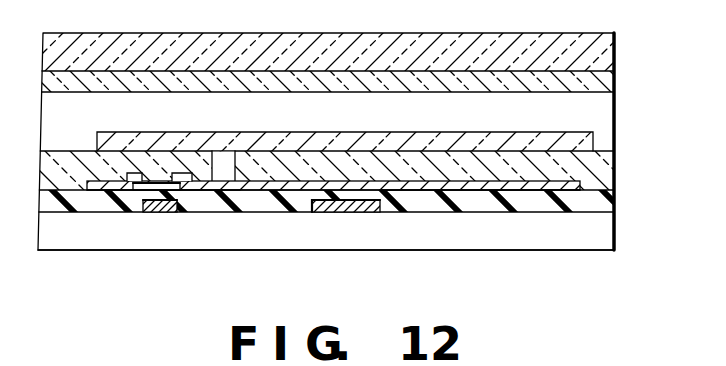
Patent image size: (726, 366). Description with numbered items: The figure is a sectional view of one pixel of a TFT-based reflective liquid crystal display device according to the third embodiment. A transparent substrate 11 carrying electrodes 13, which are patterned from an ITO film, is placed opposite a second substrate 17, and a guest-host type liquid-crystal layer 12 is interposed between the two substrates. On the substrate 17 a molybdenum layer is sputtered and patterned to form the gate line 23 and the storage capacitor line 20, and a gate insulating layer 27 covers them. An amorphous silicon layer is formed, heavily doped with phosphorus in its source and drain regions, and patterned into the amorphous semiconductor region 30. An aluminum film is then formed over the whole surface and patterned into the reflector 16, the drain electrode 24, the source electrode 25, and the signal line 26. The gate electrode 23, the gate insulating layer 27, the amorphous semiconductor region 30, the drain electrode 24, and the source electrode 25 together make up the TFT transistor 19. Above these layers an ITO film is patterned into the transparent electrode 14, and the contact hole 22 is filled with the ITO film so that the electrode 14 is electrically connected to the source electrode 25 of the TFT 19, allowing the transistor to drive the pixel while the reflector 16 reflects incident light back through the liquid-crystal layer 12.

The substrate 11 is at (394, 42).
The liquid-crystal layer 12 is at (616, 106).
The electrodes 13 is at (460, 72).
The transparent electrode 14 is at (311, 138).
The reflector 16 is at (472, 193).
The substrate 17 is at (195, 235).
The TFT transistor 19 is at (132, 204).
The storage capacitor line 20 is at (368, 202).
The contact hole 22 is at (218, 170).
The gate line 23 is at (158, 213).
The drain electrode 24 is at (128, 172).
The source electrode 25 is at (175, 172).
The signal line 26 is at (87, 180).
The gate insulating layer 27 is at (616, 200).
The amorphous semiconductor region 30 is at (138, 184).